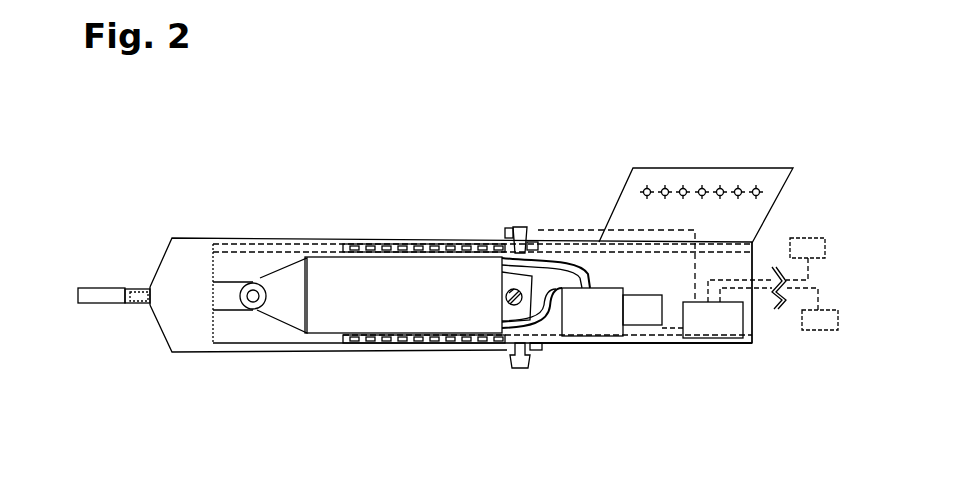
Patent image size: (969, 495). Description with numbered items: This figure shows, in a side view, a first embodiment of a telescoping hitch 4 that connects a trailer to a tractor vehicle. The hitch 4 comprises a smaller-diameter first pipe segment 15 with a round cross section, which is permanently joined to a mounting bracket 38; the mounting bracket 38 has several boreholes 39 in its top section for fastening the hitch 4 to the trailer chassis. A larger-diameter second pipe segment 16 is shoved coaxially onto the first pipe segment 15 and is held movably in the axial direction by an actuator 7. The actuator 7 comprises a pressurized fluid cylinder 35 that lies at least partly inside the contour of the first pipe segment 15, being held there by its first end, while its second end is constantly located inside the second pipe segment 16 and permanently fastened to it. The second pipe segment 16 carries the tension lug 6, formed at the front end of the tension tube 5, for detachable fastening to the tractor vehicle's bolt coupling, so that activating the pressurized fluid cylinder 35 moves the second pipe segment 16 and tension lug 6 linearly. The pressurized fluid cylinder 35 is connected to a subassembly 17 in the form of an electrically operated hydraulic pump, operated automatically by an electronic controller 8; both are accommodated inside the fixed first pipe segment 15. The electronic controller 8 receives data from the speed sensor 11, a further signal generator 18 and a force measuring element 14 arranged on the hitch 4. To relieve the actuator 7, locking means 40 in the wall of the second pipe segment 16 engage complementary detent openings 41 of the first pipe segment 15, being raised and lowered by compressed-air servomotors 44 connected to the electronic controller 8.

The hitch 4 is at (461, 89).
The tension tube 5 is at (753, 305).
The tension lug 6 is at (110, 293).
The actuator 7 is at (273, 333).
The electronic controller 8 is at (690, 320).
The speed sensor 11 is at (808, 238).
The force measuring element 14 is at (140, 303).
The first pipe segment 15 is at (580, 343).
The second pipe segment 16 is at (267, 240).
The subassembly 17 is at (581, 324).
The signal generator 18 is at (815, 330).
The pressurized fluid cylinder 35 is at (385, 308).
The mounting bracket 38 is at (770, 167).
The boreholes 39 is at (718, 186).
The locking means 40 is at (514, 226).
The detent openings 41 is at (352, 242).
The servomotors 44 is at (533, 234).